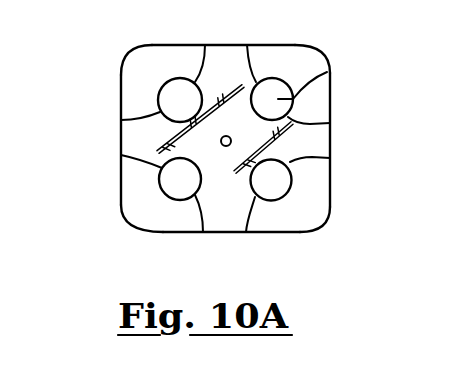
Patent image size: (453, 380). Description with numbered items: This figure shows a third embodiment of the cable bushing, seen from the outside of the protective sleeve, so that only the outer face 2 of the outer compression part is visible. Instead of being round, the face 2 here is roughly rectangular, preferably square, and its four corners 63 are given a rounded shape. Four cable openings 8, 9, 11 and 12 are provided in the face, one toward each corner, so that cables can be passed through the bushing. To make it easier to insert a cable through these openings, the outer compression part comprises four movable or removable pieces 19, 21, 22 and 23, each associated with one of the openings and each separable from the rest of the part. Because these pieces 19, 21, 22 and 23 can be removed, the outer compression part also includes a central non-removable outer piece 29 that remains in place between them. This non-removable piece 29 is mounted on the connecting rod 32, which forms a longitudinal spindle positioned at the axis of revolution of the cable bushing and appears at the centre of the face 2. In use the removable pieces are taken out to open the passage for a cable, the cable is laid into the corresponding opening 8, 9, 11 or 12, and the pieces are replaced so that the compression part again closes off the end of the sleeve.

The round outer face 2 is at (228, 45).
The corners 63 is at (141, 50).
The removable piece 23 is at (160, 60).
The removable piece 19 is at (283, 58).
The cable opening 12 is at (170, 98).
The cable opening 8 is at (331, 71).
The cable opening 11 is at (175, 180).
The cable opening 9 is at (270, 184).
The connecting rod 32 is at (220, 141).
The central non-removable outer piece 29 is at (305, 136).
The removable piece 21 is at (308, 203).
The removable piece 22 is at (137, 202).